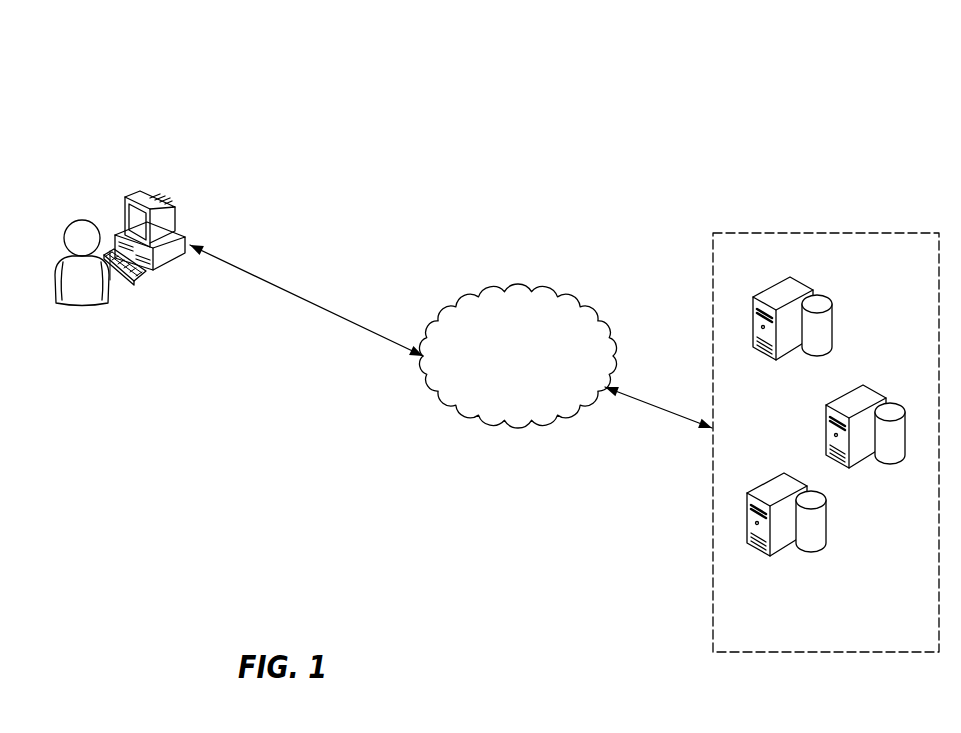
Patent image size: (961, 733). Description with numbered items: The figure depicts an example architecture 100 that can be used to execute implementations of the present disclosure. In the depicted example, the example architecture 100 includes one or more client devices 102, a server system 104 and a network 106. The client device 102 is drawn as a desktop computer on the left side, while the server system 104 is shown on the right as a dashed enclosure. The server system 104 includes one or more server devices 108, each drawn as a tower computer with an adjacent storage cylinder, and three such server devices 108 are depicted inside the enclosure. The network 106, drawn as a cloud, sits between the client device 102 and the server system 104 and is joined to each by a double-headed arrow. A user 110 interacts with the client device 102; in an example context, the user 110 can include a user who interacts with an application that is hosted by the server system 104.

The example architecture 100 is at (385, 82).
The client device 102 is at (123, 197).
The server system 104 is at (824, 233).
The network 106 is at (525, 291).
The server device 108 is at (835, 310).
The user 110 is at (82, 305).